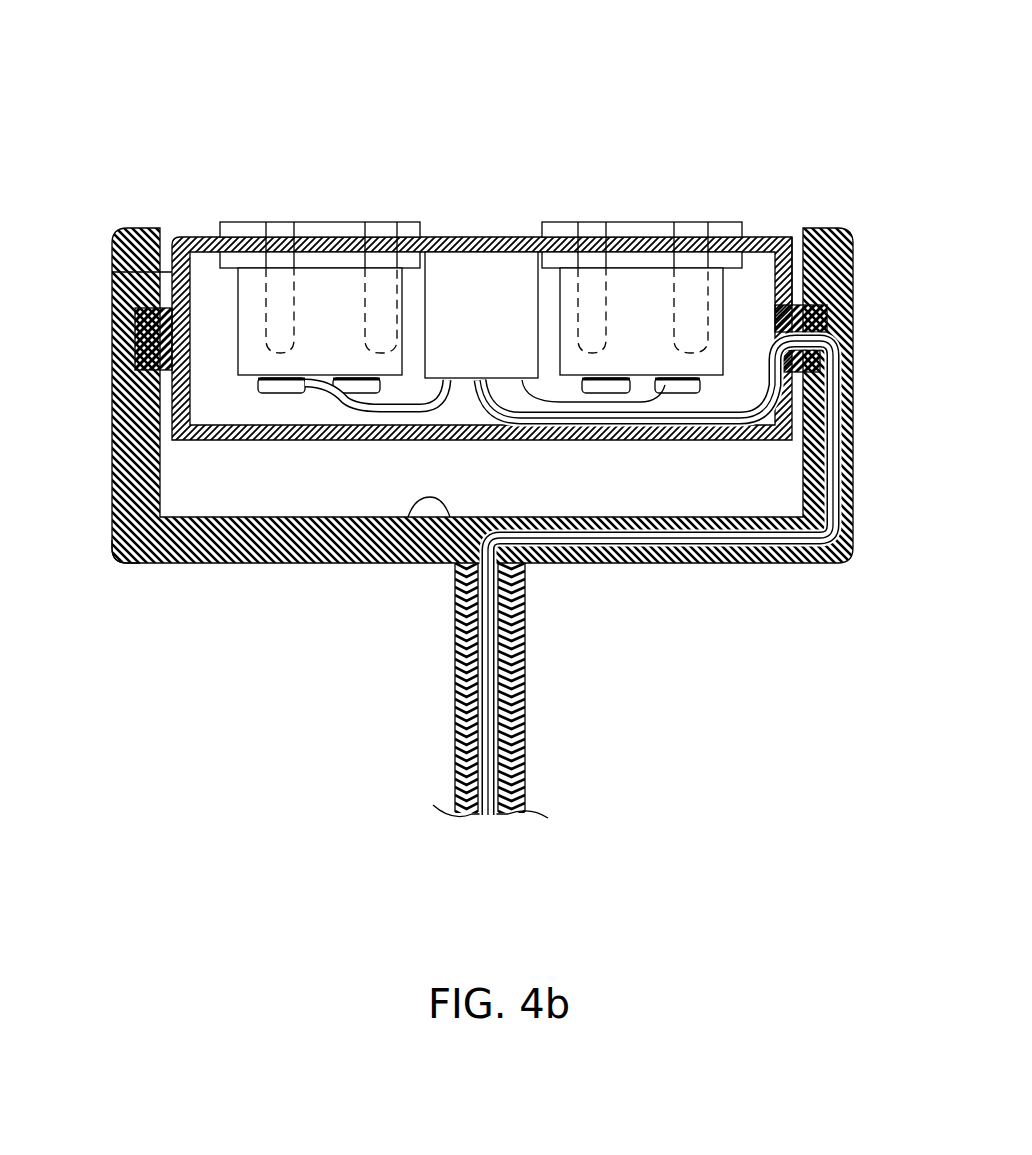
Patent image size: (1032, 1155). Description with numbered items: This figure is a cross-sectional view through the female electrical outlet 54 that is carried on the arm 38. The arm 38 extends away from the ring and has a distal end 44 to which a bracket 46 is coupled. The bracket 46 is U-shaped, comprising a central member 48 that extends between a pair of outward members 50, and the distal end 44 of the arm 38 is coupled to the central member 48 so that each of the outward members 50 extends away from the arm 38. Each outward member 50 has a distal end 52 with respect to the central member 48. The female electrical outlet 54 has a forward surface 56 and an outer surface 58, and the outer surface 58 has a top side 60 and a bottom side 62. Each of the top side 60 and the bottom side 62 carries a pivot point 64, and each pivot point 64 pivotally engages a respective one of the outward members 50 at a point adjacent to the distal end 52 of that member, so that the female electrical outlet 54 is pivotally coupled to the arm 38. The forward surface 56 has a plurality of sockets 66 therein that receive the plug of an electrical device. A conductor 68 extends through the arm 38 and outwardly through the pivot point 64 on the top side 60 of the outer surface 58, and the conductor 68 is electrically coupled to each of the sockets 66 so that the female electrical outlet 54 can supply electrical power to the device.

The arm 38 is at (455, 677).
The distal end of the arm 44 is at (410, 503).
The bracket 46 is at (112, 553).
The central member 48 is at (268, 563).
The outward members 50 is at (112, 473).
The distal end of the outward member 52 is at (125, 228).
The female electrical outlet 54 is at (320, 70).
The forward surface 56 is at (460, 235).
The outer surface 58 is at (112, 272).
The top side 60 is at (172, 392).
The bottom side 62 is at (792, 268).
The pivot point 64 is at (135, 338).
The sockets 66 is at (382, 222).
The conductor 68 is at (487, 776).